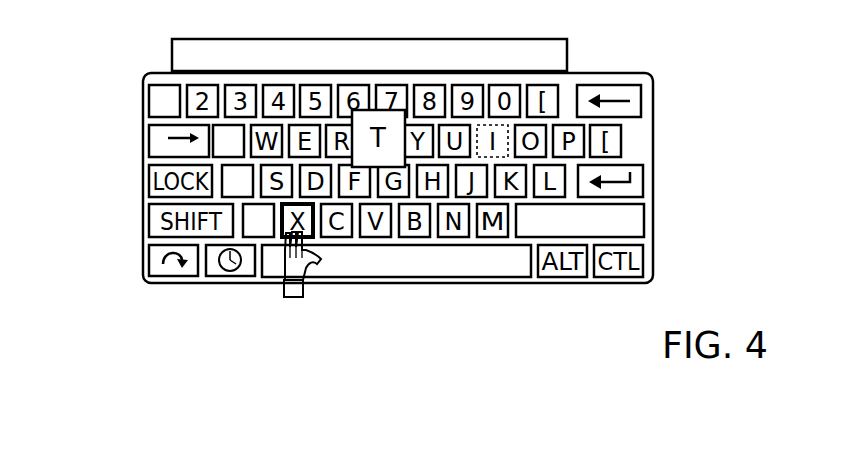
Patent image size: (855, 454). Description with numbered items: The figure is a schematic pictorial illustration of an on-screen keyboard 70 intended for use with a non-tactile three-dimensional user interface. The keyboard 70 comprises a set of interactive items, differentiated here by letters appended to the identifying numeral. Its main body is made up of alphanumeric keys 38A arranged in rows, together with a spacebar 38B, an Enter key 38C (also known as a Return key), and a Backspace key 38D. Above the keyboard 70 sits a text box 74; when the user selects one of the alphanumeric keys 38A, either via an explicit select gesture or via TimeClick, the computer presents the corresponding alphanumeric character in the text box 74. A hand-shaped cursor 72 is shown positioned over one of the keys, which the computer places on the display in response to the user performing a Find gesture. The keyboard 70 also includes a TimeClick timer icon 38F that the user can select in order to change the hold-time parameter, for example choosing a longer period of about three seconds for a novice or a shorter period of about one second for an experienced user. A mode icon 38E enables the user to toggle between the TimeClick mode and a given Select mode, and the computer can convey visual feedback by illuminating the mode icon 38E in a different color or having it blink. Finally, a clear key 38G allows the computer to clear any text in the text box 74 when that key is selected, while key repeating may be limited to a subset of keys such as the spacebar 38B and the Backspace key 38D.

The on-screen keyboard 70 is at (83, 57).
The text box 74 is at (567, 50).
The alphanumeric keys 38A is at (243, 222).
The Backspace key 38D is at (641, 92).
The Enter key 38C is at (643, 175).
The clear key 38G is at (644, 213).
The mode icon 38E is at (162, 276).
The TimeClick timer icon 38F is at (245, 276).
The spacebar 38B is at (483, 277).
The hand-shaped cursor 72 is at (295, 297).